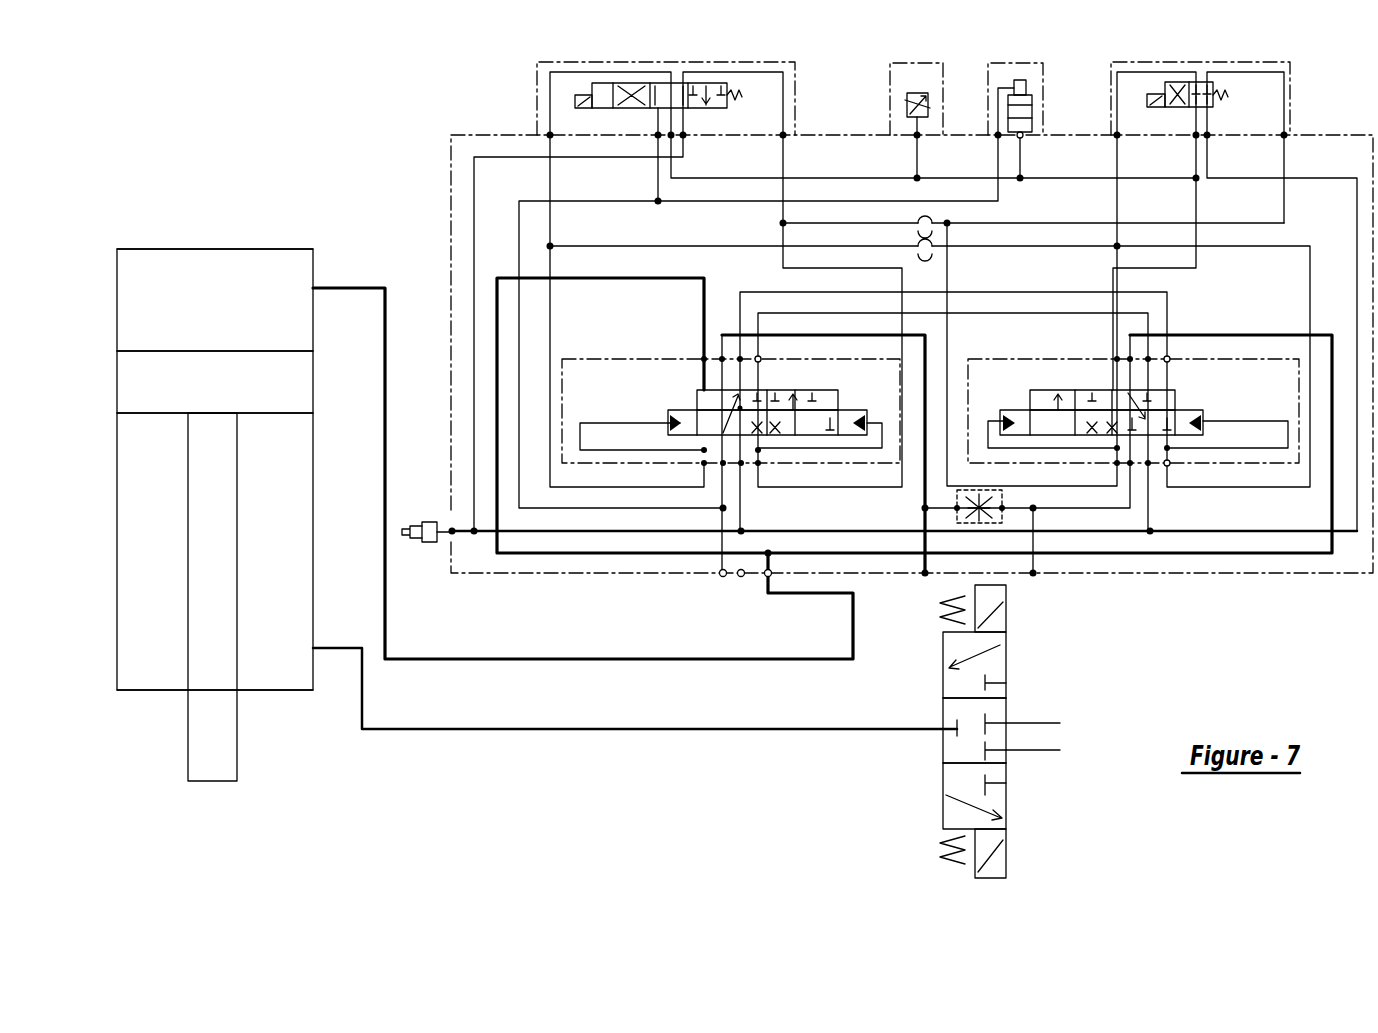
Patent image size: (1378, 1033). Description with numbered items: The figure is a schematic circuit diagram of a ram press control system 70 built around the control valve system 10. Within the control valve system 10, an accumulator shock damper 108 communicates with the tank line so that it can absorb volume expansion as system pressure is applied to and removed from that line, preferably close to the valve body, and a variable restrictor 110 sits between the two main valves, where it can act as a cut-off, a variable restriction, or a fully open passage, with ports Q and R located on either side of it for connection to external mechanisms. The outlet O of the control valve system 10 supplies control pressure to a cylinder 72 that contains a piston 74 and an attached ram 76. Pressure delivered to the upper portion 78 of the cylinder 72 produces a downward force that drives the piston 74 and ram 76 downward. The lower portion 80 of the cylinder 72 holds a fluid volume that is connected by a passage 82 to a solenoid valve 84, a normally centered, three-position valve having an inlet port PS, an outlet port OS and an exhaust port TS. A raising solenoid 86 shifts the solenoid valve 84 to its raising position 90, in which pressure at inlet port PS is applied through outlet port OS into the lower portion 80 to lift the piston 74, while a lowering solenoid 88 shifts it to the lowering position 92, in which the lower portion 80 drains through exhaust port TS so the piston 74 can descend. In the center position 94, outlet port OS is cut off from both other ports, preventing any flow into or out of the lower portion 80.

The control valve system 10 is at (1340, 118).
The ram press control system 70 is at (323, 205).
The cylinder 72 is at (170, 249).
The piston 74 is at (263, 394).
The ram 76 is at (226, 736).
The upper portion 78 is at (240, 312).
The lower portion 80 is at (290, 554).
The passage 82 is at (362, 690).
The solenoid valve 84 is at (1088, 666).
The raising solenoid 86 is at (1008, 617).
The lowering solenoid 88 is at (1005, 840).
The raising position 90 is at (943, 658).
The lowering position 92 is at (943, 783).
The center position 94 is at (943, 748).
The accumulator shock damper 108 is at (437, 542).
The variable restrictor 110 is at (980, 525).